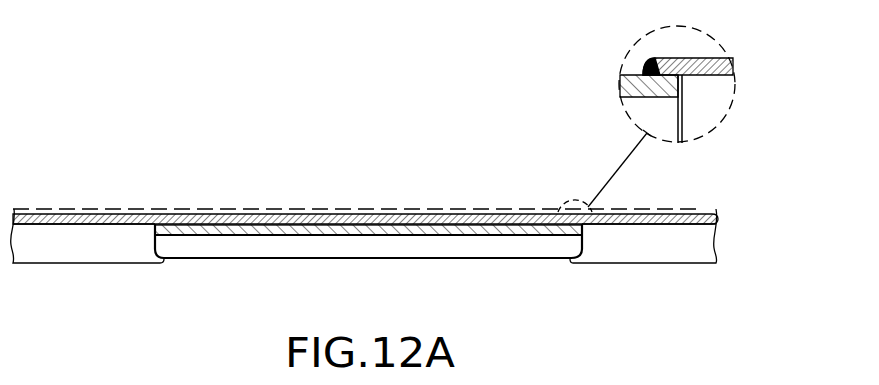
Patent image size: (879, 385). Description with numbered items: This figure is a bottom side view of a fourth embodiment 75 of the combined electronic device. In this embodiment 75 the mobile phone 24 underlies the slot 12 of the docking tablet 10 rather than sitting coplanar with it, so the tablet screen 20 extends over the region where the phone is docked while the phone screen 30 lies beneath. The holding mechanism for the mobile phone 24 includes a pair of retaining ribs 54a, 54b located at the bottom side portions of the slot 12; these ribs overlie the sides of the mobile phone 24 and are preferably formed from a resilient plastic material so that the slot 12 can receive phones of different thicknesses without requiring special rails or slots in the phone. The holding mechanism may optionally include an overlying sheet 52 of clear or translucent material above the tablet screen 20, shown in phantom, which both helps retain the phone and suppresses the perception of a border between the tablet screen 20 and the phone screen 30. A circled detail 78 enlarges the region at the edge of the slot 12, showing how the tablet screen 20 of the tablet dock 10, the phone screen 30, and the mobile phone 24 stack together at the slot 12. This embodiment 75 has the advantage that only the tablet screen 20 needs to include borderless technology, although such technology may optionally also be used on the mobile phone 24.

The fourth embodiment 75 is at (155, 138).
The edge region of top layer 78 is at (168, 222).
The tablet screen 20 is at (718, 222).
The phone screen 30 is at (640, 68).
The tablet dock 10 is at (663, 257).
The mobile phone 24 is at (367, 237).
The slot 12 is at (162, 238).
The clear or translucent sheet 52 is at (700, 209).
The retaining rib 54a is at (168, 262).
The retaining rib 54b is at (573, 260).